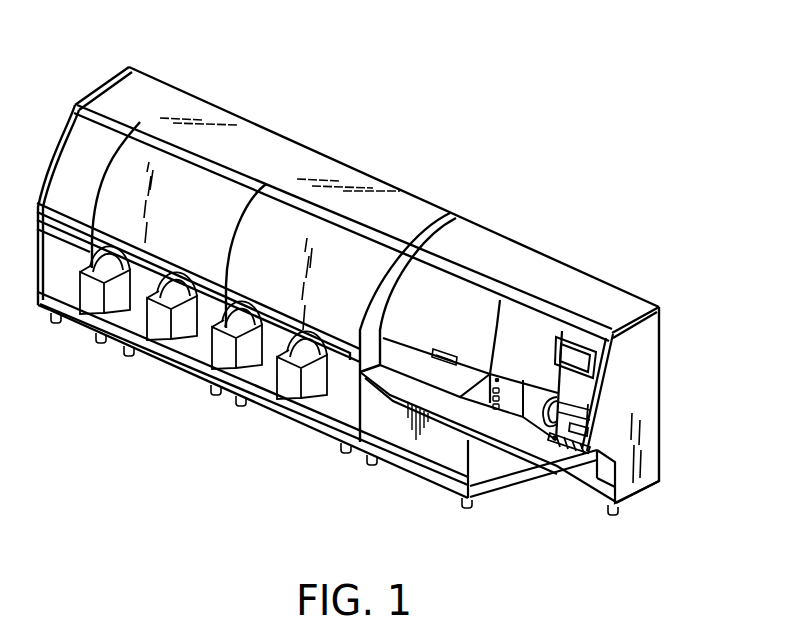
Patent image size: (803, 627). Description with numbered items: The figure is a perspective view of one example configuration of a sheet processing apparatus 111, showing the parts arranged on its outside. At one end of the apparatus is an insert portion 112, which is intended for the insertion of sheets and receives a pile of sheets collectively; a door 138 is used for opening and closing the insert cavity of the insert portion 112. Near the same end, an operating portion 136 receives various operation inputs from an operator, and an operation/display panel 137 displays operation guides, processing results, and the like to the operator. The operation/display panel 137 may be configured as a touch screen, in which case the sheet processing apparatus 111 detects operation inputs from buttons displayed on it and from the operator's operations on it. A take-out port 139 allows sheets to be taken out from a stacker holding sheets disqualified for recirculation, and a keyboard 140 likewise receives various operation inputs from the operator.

The sheet processing apparatus 111 is at (513, 183).
The insert portion 112 is at (536, 376).
The operating portion 136 is at (499, 437).
The operation/display panel 137 is at (597, 360).
The door 138 is at (535, 413).
The take-out port 139 is at (600, 398).
The keyboard 140 is at (570, 445).